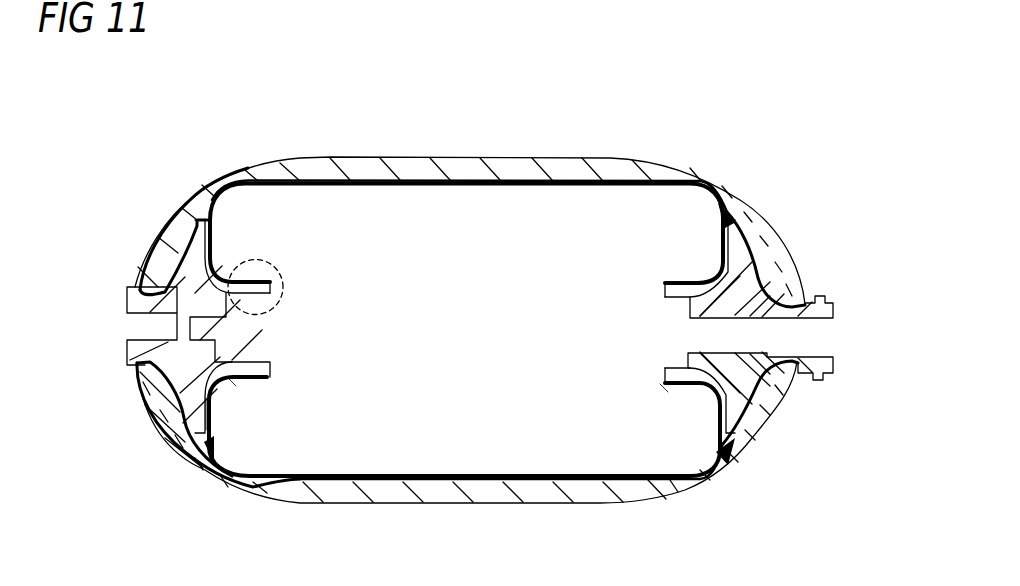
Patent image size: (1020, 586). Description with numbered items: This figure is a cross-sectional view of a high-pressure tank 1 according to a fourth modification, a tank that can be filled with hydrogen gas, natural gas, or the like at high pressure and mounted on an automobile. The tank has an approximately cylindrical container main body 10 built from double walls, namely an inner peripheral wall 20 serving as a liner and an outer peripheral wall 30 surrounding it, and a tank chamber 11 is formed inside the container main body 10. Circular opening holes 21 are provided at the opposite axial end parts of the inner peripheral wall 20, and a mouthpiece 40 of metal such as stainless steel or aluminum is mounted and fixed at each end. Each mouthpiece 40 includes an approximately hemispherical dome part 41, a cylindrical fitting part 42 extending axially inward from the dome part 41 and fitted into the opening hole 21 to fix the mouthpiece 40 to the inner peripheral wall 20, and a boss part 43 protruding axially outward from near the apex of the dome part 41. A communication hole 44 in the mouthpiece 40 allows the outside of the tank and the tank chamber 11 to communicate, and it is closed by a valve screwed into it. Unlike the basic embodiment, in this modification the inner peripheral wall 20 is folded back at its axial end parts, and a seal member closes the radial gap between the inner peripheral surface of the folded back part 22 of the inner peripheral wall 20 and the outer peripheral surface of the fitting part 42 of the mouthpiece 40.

The high-pressure tank 1 is at (735, 150).
The container main body 10 is at (702, 490).
The tank chamber 11 is at (477, 455).
The inner peripheral wall 20 is at (578, 192).
The opening hole 21 is at (257, 365).
The folded back part 22 is at (257, 387).
The outer peripheral wall 30 is at (410, 170).
The mouthpiece 40 is at (195, 243).
The dome part 41 is at (176, 413).
The fitting part 42 is at (255, 360).
The boss part 43 is at (135, 299).
The communication hole 44 is at (822, 343).